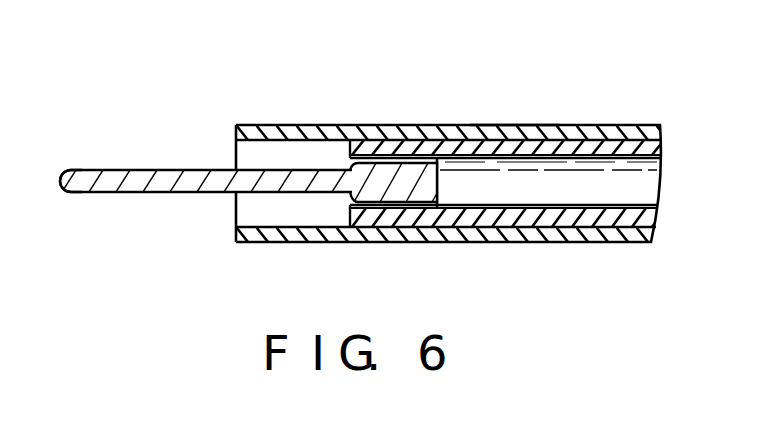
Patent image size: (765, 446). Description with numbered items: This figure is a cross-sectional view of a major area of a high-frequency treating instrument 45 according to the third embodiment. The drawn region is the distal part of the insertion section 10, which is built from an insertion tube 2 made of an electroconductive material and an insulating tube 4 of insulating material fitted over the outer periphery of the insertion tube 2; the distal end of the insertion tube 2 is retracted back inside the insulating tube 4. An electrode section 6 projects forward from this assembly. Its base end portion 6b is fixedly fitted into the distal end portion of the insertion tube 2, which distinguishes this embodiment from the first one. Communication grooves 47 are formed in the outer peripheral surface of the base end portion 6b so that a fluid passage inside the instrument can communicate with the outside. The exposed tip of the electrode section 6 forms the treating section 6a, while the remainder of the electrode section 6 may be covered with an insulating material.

The insertion tube 2 is at (598, 148).
The insulating tube 4 is at (407, 135).
The electrode section 6 is at (96, 193).
The treating section 6a is at (96, 193).
The base end portion 6b is at (393, 203).
The insertion section 10 is at (468, 243).
The high-frequency treating instrument 45 is at (512, 116).
The communication grooves 47 is at (427, 155).